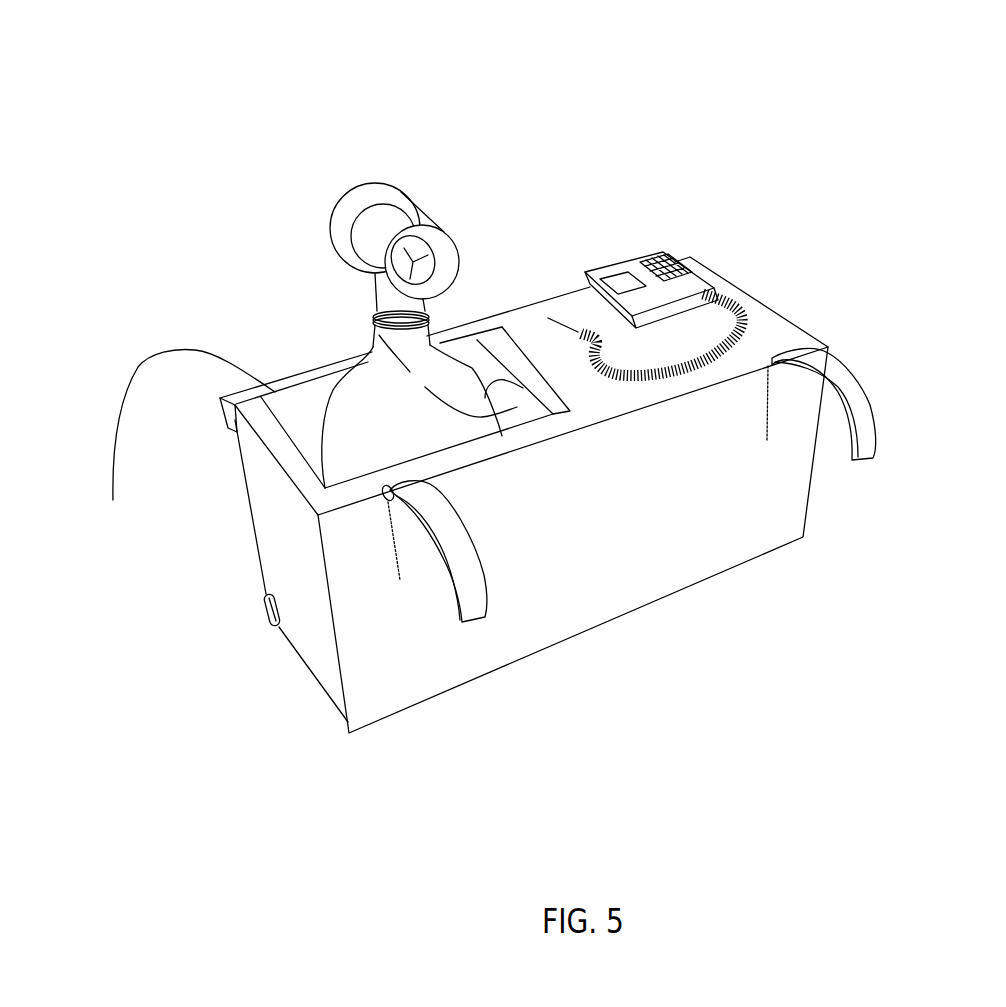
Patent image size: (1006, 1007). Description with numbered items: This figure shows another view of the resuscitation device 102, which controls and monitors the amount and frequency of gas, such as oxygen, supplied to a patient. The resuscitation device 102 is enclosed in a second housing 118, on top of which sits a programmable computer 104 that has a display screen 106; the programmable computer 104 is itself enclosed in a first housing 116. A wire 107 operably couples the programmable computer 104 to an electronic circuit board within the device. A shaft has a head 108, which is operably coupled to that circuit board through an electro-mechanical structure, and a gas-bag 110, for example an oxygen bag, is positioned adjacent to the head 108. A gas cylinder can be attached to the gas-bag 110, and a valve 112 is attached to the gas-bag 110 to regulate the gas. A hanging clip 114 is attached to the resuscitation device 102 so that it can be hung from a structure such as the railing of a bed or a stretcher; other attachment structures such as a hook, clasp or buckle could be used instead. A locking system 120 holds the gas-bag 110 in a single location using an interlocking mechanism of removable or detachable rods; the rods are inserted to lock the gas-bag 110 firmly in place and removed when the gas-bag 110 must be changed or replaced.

The resuscitation device 102 is at (93, 93).
The programmable computer 104 is at (653, 255).
The display screen 106 is at (588, 290).
The wire 107 is at (743, 331).
The head 108 is at (374, 394).
The gas-bag 110 is at (368, 393).
The valve 112 is at (397, 194).
The hanging clip 114 is at (823, 386).
The first housing 116 is at (550, 320).
The second housing 118 is at (630, 590).
The locking system 120 is at (268, 626).